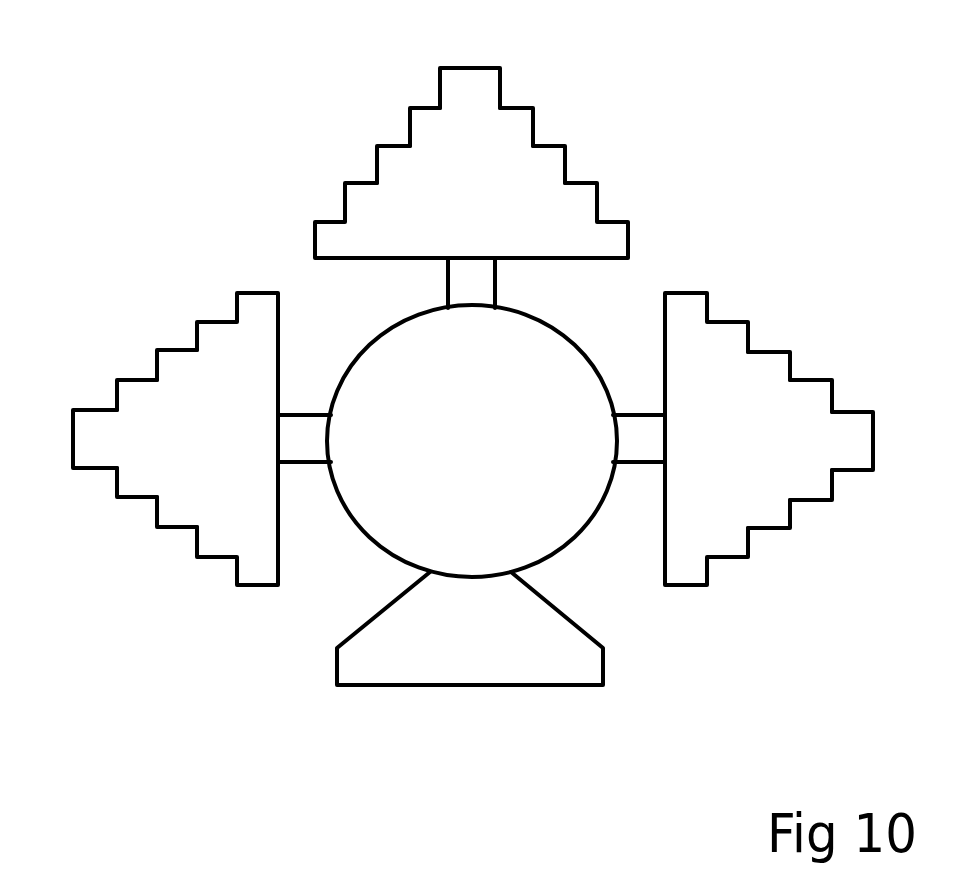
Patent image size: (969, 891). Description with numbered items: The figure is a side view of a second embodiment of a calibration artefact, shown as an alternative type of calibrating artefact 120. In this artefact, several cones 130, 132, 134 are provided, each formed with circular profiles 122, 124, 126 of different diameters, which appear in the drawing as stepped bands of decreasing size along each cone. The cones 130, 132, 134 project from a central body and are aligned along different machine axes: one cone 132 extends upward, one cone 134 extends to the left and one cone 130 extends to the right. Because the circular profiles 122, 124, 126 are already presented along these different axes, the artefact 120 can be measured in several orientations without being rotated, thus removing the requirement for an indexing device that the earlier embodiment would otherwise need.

The calibrating artefact 120 is at (464, 347).
The circular profile 122 is at (425, 83).
The circular profile 124 is at (400, 127).
The circular profile 126 is at (367, 163).
The cone 130 is at (748, 378).
The cone 132 is at (492, 130).
The cone 134 is at (148, 463).